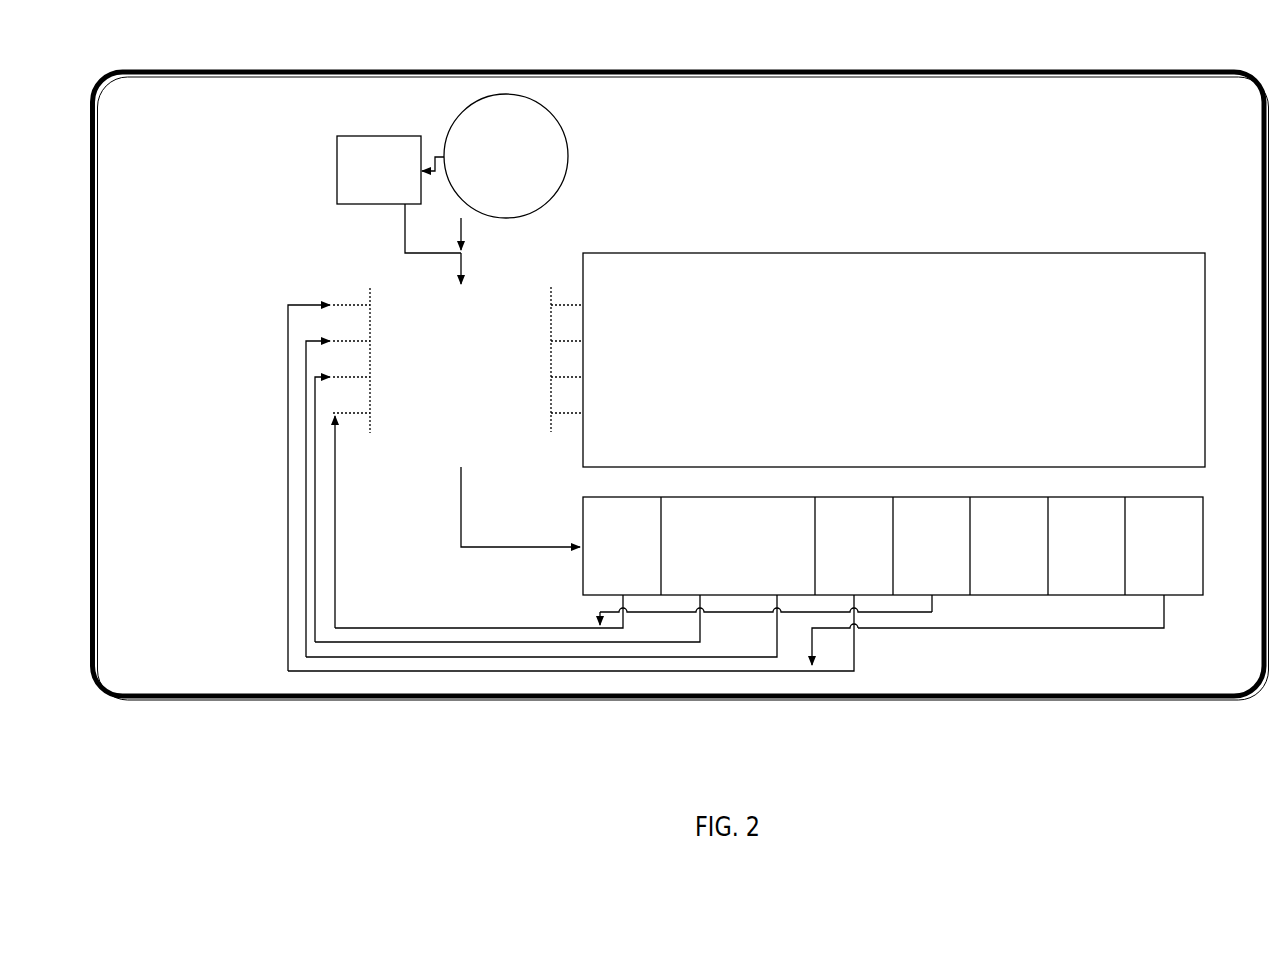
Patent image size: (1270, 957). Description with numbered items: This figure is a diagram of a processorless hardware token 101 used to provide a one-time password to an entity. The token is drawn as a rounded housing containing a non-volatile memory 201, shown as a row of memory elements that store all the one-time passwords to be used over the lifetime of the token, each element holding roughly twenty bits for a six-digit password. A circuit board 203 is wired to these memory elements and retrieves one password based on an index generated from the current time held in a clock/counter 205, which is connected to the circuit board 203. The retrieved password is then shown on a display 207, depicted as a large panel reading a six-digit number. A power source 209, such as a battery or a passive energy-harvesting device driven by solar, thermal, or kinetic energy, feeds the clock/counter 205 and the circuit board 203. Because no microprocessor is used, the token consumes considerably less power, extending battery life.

The processorless hardware token 101 is at (433, 70).
The non-volatile memory 201 is at (583, 580).
The circuit board 203 is at (437, 433).
The clock/counter 205 is at (337, 153).
The display 207 is at (715, 253).
The power source 209 is at (569, 151).